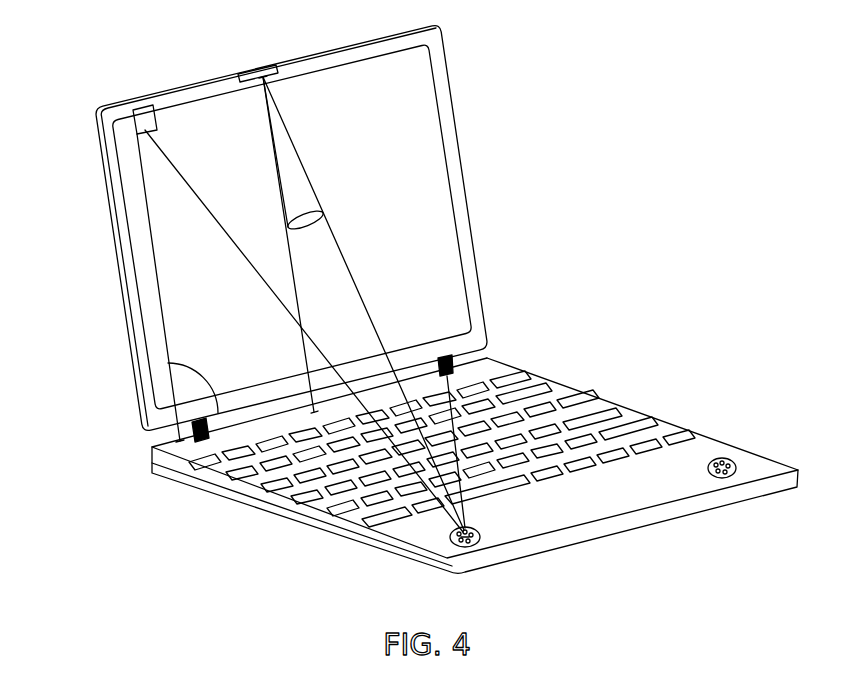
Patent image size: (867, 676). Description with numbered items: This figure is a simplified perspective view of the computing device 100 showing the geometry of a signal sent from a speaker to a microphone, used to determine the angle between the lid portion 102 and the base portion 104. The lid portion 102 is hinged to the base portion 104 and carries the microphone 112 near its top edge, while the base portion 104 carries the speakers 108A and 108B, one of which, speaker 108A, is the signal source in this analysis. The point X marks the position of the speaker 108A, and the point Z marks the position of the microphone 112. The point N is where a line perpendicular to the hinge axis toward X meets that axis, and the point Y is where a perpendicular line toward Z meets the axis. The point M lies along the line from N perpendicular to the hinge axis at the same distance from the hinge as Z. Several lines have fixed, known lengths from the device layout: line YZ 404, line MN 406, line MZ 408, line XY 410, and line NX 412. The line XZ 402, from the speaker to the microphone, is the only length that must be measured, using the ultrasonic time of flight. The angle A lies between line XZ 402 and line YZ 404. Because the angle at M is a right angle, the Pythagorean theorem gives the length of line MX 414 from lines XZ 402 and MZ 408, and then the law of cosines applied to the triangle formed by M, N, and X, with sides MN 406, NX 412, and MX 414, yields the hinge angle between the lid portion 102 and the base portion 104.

The computing device 100 is at (40, 99).
The lid portion 102 is at (100, 178).
The base portion 104 is at (152, 473).
The speaker 108A is at (450, 540).
The speaker 108B is at (732, 460).
The microphone 112 is at (257, 67).
The line XZ 402 is at (343, 243).
The line YZ 404 is at (283, 193).
The line MN 406 is at (157, 290).
The line MZ 408 is at (190, 90).
The line XY 410 is at (338, 422).
The line NX 412 is at (270, 477).
The line MX 414 is at (242, 252).
The point M is at (133, 108).
The point Z is at (266, 74).
The angle A is at (307, 230).
The point Y is at (315, 410).
The point N is at (180, 443).
The point X is at (478, 542).